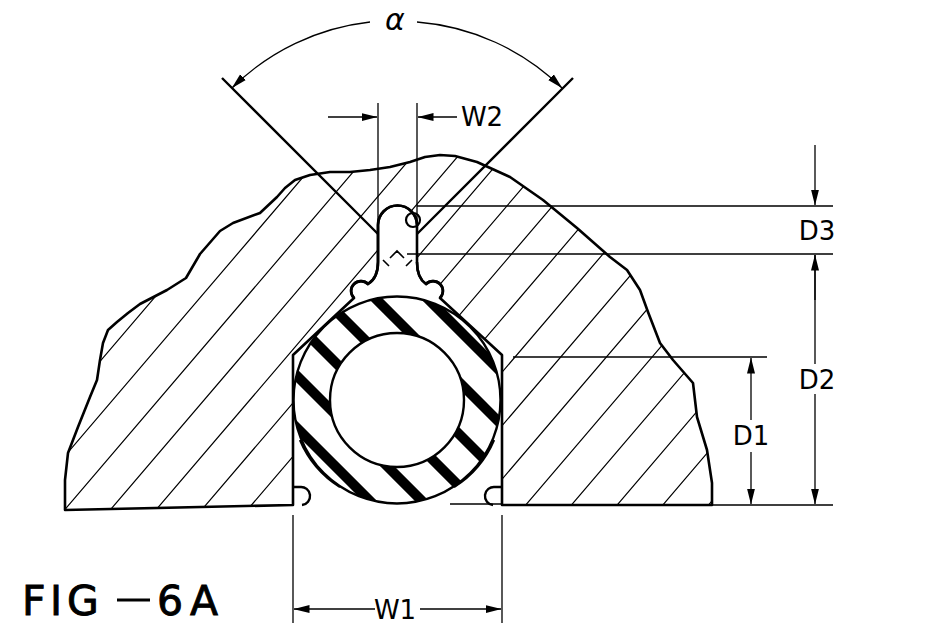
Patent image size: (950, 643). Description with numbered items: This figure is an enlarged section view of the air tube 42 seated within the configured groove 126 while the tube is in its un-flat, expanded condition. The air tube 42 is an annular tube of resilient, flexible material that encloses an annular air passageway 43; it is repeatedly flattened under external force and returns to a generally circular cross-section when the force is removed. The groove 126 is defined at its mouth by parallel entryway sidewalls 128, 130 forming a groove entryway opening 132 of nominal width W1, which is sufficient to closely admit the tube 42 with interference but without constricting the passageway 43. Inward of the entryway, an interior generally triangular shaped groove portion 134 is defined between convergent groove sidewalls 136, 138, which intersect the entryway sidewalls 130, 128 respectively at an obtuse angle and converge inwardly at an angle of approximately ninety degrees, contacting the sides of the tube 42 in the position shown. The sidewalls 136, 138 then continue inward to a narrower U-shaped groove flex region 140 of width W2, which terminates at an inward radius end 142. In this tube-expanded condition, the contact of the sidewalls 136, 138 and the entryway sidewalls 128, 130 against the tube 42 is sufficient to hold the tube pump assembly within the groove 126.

The air tube 42 is at (472, 362).
The annular passageway 43 is at (380, 372).
The groove 126 is at (319, 488).
The entryway sidewall 128 is at (493, 505).
The entryway sidewall 130 is at (302, 505).
The groove entryway opening 132 is at (475, 488).
The interior generally triangular shaped groove portion 134 is at (379, 262).
The convergent groove sidewall 136 is at (440, 292).
The convergent groove sidewall 138 is at (370, 284).
The U-shaped groove flex region 140 is at (381, 212).
The inward radius end 142 is at (420, 228).